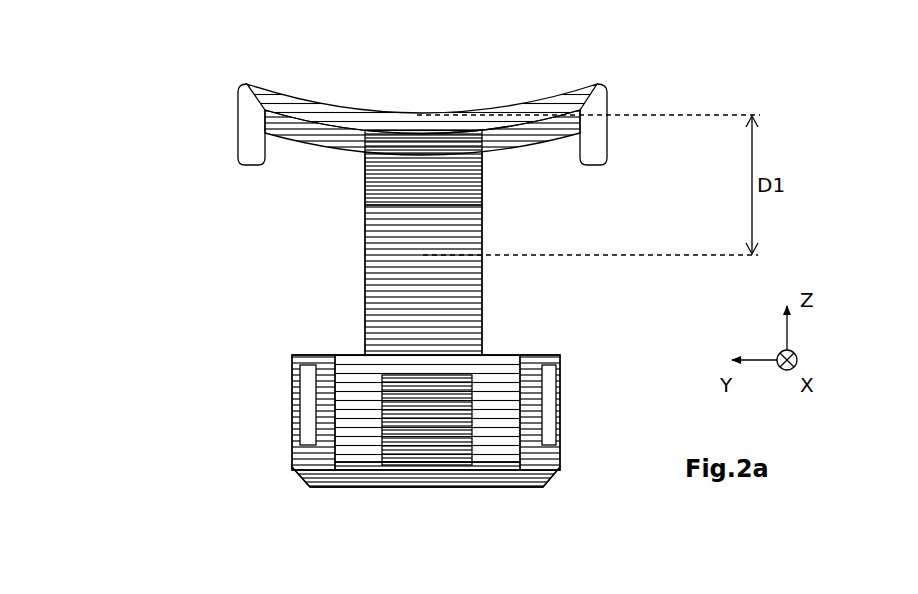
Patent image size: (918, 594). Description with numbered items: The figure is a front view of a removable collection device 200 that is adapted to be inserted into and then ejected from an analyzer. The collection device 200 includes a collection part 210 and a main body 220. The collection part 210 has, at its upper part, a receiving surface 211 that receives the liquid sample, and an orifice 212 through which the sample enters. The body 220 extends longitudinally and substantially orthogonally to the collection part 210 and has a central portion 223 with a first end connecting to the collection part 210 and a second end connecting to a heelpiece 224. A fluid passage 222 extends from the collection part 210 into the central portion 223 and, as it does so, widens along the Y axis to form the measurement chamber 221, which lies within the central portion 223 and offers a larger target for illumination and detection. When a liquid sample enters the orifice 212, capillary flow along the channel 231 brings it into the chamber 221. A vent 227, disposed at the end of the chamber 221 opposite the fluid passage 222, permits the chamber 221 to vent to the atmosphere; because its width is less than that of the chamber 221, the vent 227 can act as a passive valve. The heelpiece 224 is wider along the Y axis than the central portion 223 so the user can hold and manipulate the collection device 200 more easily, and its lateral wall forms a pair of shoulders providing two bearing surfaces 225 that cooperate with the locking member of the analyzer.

The collection device 200 is at (148, 126).
The collection part 210 is at (226, 95).
The receiving surface 211 is at (493, 107).
The orifice 212 is at (417, 107).
The main body 220 is at (232, 377).
The measurement chamber 221 is at (433, 271).
The fluid passage 222 is at (430, 167).
The central portion 223 is at (358, 268).
The heelpiece 224 is at (288, 455).
The bearing surface 225 is at (333, 358).
The vent 227 is at (470, 250).
The channel 231 is at (410, 216).